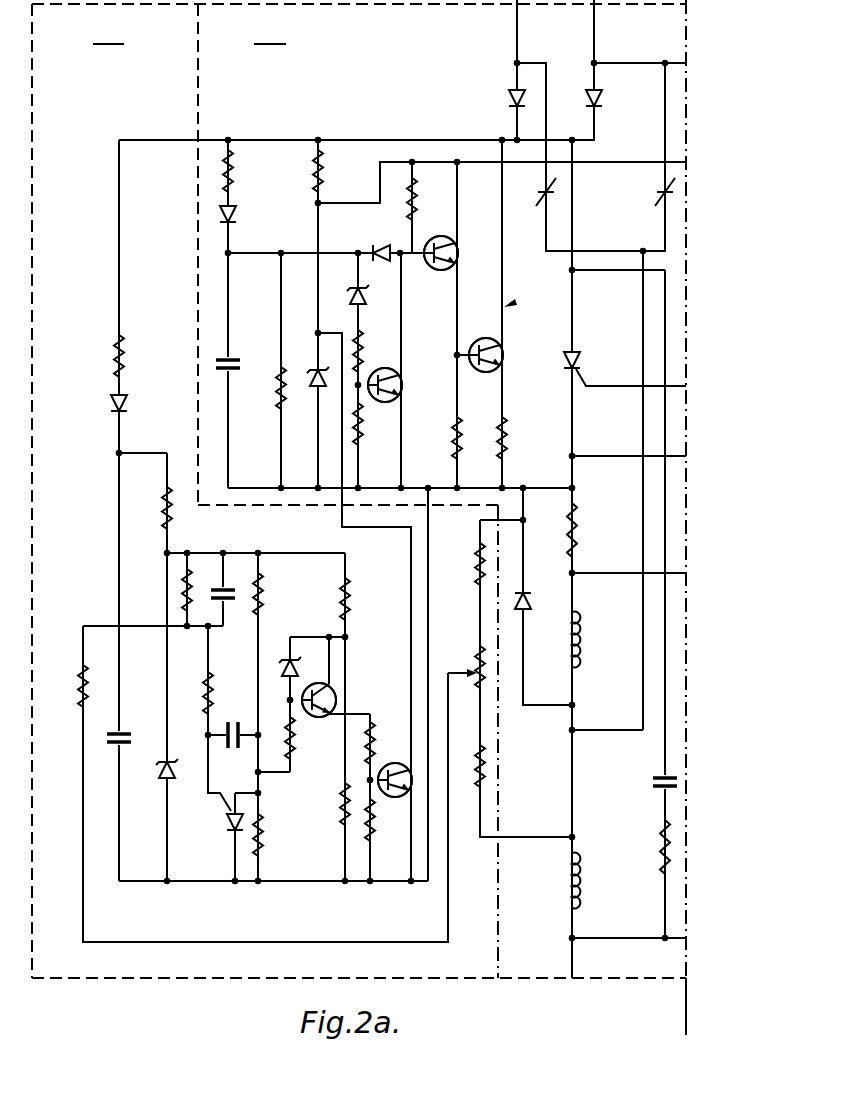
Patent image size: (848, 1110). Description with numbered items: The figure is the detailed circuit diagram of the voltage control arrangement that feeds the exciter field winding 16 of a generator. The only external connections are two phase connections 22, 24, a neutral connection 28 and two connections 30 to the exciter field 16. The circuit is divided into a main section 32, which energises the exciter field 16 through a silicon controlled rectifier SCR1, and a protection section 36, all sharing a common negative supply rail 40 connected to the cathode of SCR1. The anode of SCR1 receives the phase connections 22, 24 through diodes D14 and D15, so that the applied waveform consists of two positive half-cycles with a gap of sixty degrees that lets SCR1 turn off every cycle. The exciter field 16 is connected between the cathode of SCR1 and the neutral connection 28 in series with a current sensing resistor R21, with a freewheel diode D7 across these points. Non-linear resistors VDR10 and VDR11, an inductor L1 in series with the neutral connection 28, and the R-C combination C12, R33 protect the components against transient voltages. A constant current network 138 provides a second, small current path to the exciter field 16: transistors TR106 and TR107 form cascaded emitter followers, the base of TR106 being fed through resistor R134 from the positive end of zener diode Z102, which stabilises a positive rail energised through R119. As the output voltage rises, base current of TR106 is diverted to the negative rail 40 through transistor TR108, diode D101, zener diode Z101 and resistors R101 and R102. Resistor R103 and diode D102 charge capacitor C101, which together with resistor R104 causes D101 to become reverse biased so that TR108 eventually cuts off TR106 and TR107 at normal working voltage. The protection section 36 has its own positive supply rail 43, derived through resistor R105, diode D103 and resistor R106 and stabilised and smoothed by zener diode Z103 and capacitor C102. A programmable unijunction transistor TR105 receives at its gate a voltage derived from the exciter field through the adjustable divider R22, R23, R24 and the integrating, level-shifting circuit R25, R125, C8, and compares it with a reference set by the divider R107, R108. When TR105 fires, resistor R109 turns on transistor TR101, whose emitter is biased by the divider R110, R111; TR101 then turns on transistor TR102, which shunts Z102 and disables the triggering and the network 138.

The protection section 36 is at (115, 491).
The main section 32 is at (348, 499).
The phase connection 24 is at (517, 22).
The phase connection 22 is at (596, 22).
The common negative supply rail 40 is at (397, 906).
The positive supply rail 43 is at (305, 550).
The constant current network 138 is at (510, 304).
The connections to the exciter field 30 is at (576, 688).
The exciter field winding 16 is at (578, 617).
The neutral connection 28 is at (572, 959).
The diode D15 is at (498, 101).
The diode D14 is at (614, 101).
The non-linear resistor VDR10 is at (530, 194).
The non-linear resistor VDR11 is at (645, 194).
The resistor R103 is at (253, 171).
The resistor R119 is at (295, 175).
The diode D102 is at (254, 218).
The resistor R134 is at (432, 195).
The diode D101 is at (372, 243).
The transistor TR106 is at (459, 253).
The zener diode Z101 is at (373, 300).
The resistor R101 is at (376, 345).
The transistor TR108 is at (403, 386).
The resistor R102 is at (376, 428).
The transistor TR107 is at (505, 349).
The silicon controlled rectifier SCR1 is at (598, 357).
The capacitor C101 is at (242, 339).
The resistor R104 is at (264, 394).
The zener diode Z102 is at (308, 408).
The resistor R105 is at (138, 350).
The diode D103 is at (144, 405).
The resistor R106 is at (149, 508).
The capacitor C8 is at (231, 582).
The resistor R125 is at (182, 590).
The resistor R107 is at (277, 596).
The resistor R110 is at (364, 596).
The resistor R25 is at (69, 686).
The capacitor C102 is at (133, 717).
The zener diode Z103 is at (153, 789).
The programmable unijunction transistor TR105 is at (215, 839).
The resistor R108 is at (277, 837).
The resistor R109 is at (308, 740).
The resistor R111 is at (331, 801).
The transistor TR101 is at (325, 688).
The transistor TR102 is at (411, 789).
The resistor R22 is at (464, 560).
The adjustable resistor R23 is at (464, 658).
The resistor R24 is at (483, 775).
The freewheel diode D7 is at (534, 589).
The current sensing resistor R21 is at (592, 527).
The capacitor C12 is at (651, 771).
The resistor R33 is at (645, 847).
The inductor L1 is at (588, 881).